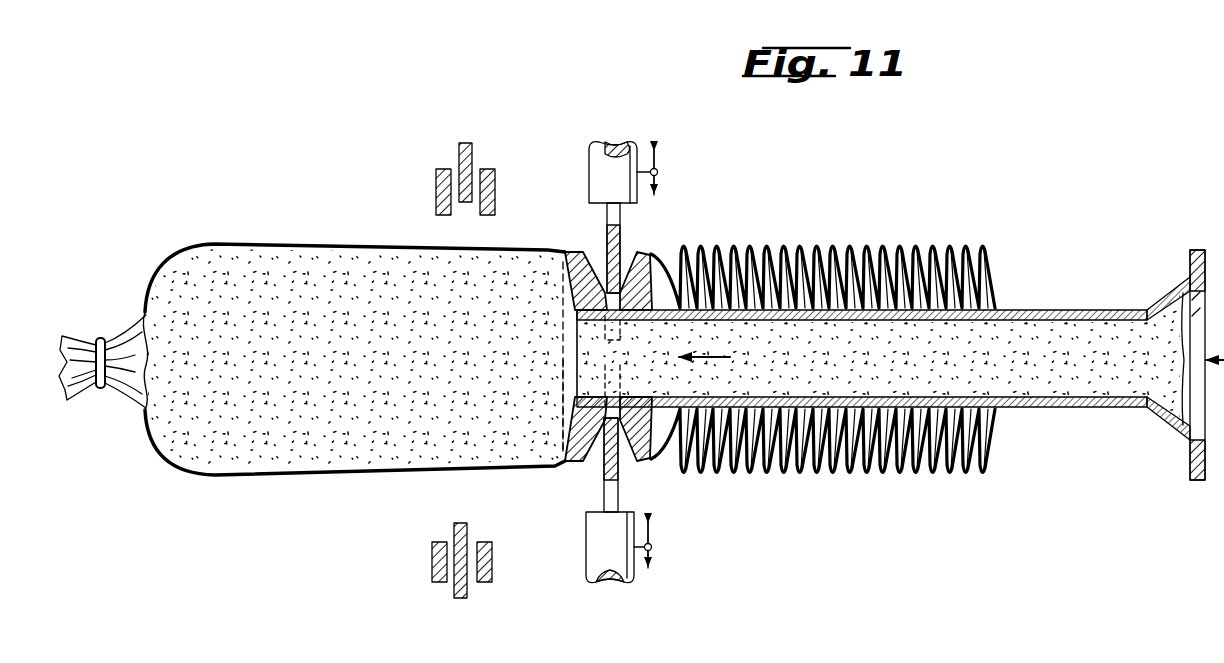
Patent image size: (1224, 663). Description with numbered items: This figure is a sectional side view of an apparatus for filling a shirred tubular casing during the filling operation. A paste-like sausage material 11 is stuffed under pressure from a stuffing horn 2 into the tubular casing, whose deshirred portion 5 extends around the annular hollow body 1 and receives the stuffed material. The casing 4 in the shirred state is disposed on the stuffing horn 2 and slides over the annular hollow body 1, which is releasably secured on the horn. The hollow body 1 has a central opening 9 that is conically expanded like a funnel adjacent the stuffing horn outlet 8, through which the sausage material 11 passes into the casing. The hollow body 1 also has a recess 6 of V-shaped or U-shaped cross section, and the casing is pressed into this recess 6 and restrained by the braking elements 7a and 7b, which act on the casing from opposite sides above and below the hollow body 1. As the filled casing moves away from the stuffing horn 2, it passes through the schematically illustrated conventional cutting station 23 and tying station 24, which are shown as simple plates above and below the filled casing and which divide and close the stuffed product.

The annular hollow body 1 is at (562, 280).
The stuffing horn 2 is at (1086, 310).
The shirred tubular casing 4 is at (832, 464).
The deshirred portion of tubular casing 5 is at (336, 244).
The recess 6 is at (597, 276).
The brake 7a is at (615, 583).
The brake 7b is at (604, 150).
The stuffing horn outlet 8 is at (577, 348).
The central opening 9 is at (563, 368).
The sausage material 11 is at (302, 453).
The cutting station 23 is at (470, 160).
The tying station 24 is at (437, 180).